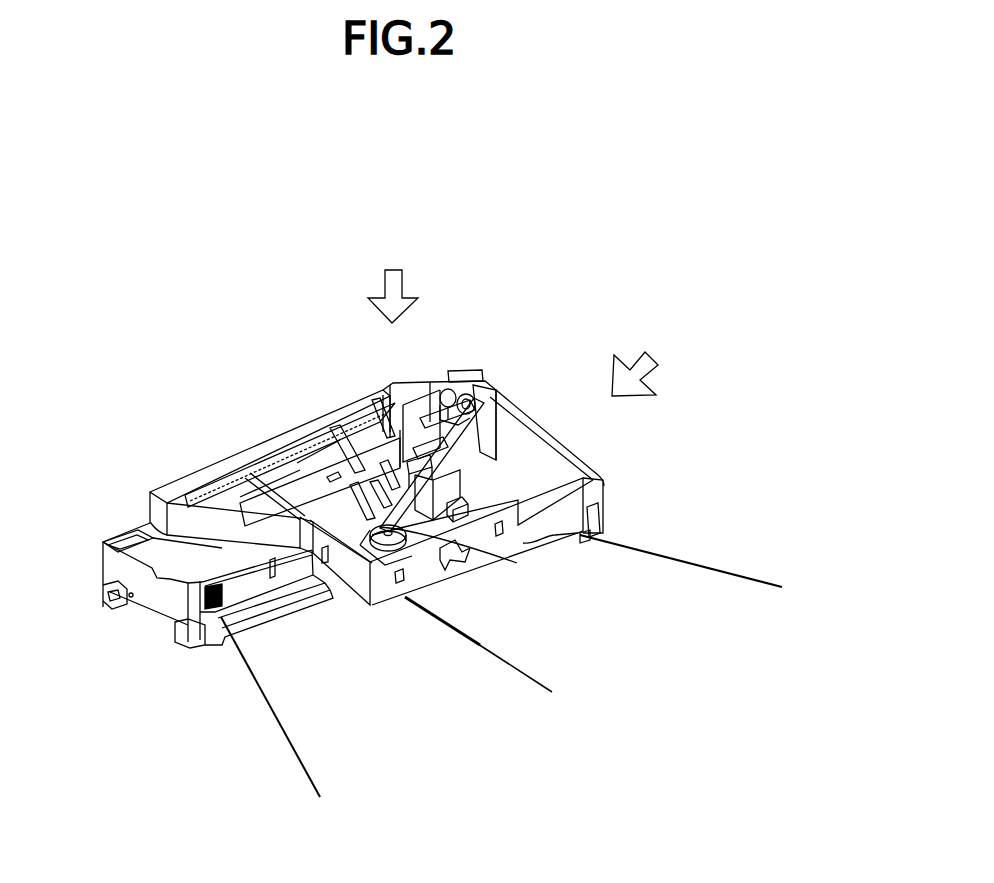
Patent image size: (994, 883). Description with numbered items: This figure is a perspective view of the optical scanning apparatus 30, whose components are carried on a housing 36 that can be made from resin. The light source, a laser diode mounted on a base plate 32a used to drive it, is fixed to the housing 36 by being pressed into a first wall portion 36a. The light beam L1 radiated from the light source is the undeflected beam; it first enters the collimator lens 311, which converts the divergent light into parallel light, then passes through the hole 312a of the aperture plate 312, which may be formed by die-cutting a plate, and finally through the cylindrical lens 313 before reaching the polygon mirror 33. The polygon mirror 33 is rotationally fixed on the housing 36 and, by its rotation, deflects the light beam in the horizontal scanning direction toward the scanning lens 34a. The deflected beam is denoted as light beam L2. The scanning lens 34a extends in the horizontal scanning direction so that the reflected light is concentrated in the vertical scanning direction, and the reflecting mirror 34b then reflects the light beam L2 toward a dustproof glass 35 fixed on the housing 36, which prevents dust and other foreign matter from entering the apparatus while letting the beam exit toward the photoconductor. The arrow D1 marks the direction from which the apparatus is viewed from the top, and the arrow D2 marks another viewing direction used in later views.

The optical scanning apparatus 30 is at (141, 477).
The base plate 32a is at (463, 373).
The polygon mirror 33 is at (410, 540).
The scanning lens 34a is at (320, 505).
The reflecting mirror 34b is at (310, 448).
The dustproof glass 35 is at (262, 602).
The housing 36 is at (551, 527).
The first wall portion 36a is at (477, 393).
The collimator lens 311 is at (473, 402).
The aperture plate 312 is at (455, 445).
The hole 312a is at (447, 467).
The cylindrical lens 313 is at (423, 468).
The light beam L1 is at (510, 555).
The light beam L2 is at (240, 497).
The arrow D1 is at (404, 296).
The arrow D2 is at (646, 380).